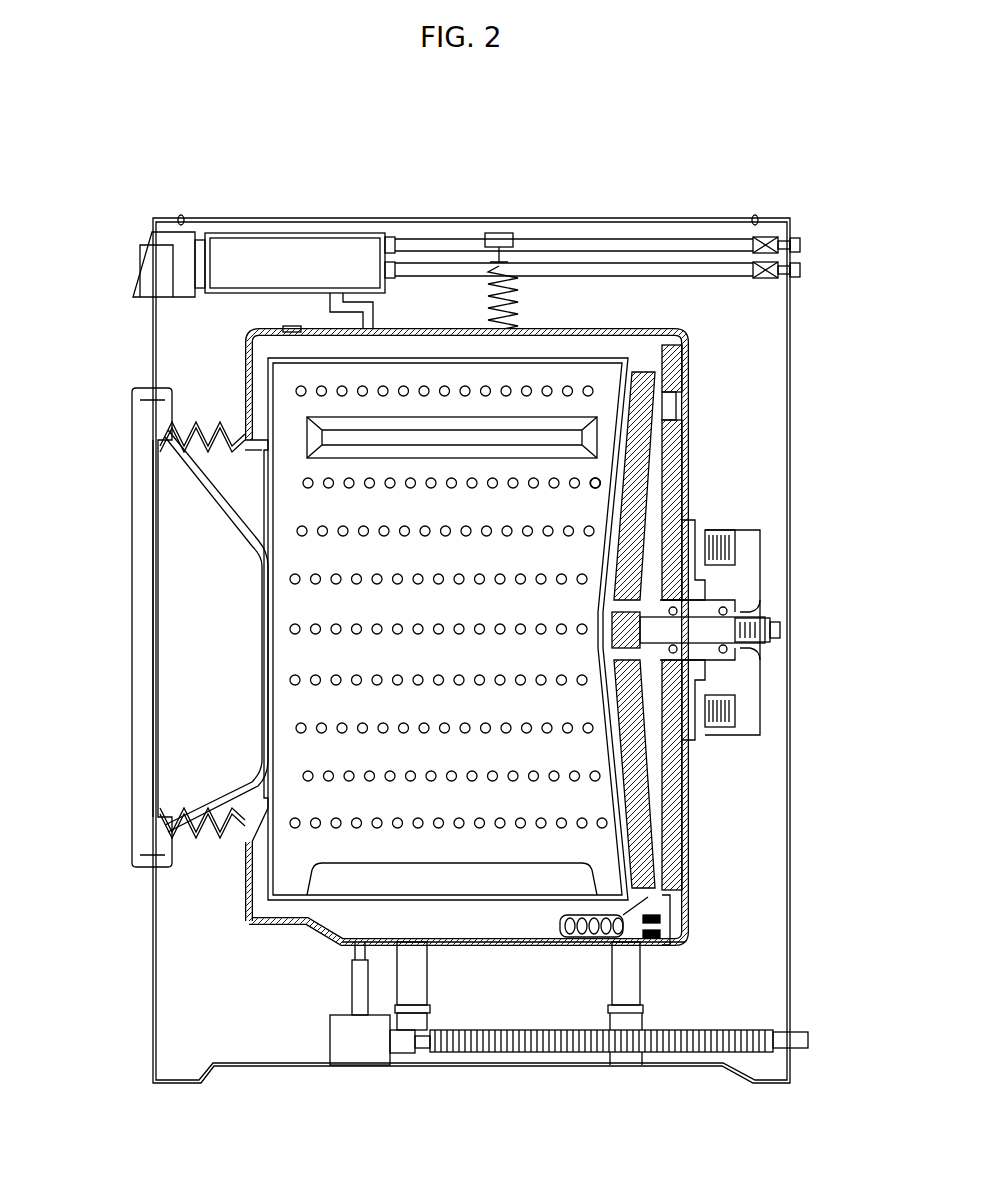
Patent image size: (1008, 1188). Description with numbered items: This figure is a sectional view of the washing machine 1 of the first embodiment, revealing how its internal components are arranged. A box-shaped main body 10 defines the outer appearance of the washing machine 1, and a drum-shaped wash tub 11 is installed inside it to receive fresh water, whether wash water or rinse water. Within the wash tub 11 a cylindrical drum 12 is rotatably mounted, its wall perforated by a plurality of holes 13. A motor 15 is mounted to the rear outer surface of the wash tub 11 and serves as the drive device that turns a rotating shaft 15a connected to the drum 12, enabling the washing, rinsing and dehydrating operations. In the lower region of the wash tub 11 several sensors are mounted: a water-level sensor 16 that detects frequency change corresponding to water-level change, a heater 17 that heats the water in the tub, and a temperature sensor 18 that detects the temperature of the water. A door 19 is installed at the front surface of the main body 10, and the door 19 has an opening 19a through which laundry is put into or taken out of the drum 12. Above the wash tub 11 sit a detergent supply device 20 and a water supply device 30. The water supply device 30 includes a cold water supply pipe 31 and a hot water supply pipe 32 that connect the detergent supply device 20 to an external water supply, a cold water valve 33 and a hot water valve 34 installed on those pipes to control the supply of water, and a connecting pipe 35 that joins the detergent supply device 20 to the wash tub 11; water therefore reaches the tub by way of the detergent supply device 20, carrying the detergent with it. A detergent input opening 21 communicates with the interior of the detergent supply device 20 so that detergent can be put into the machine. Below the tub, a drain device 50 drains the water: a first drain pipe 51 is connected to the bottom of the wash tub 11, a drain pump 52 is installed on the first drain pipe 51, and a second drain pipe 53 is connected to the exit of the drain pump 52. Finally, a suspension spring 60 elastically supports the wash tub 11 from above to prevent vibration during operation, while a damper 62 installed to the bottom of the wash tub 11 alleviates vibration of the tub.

The washing machine 1 is at (474, 100).
The main body 10 is at (790, 400).
The wash tub 11 is at (440, 330).
The drum 12 is at (565, 618).
The holes 13 is at (600, 484).
The motor 15 is at (742, 632).
The rotating shaft 15a is at (735, 636).
The water-level sensor 16 is at (680, 945).
The heater 17 is at (650, 897).
The temperature sensor 18 is at (665, 927).
The door 19 is at (132, 672).
The opening 19a is at (158, 795).
The detergent supply device 20 is at (268, 232).
The detergent input opening 21 is at (160, 262).
The water supply device 30 is at (628, 227).
The cold water supply pipe 31 is at (590, 245).
The hot water supply pipe 32 is at (635, 268).
The cold water valve 33 is at (760, 236).
The hot water valve 34 is at (770, 279).
The connecting pipe 35 is at (330, 300).
The drain device 50 is at (552, 1038).
The first drain pipe 51 is at (355, 985).
The drain pump 52 is at (360, 1055).
The second drain pipe 53 is at (435, 1050).
The suspension spring 60 is at (505, 292).
The damper 62 is at (635, 975).